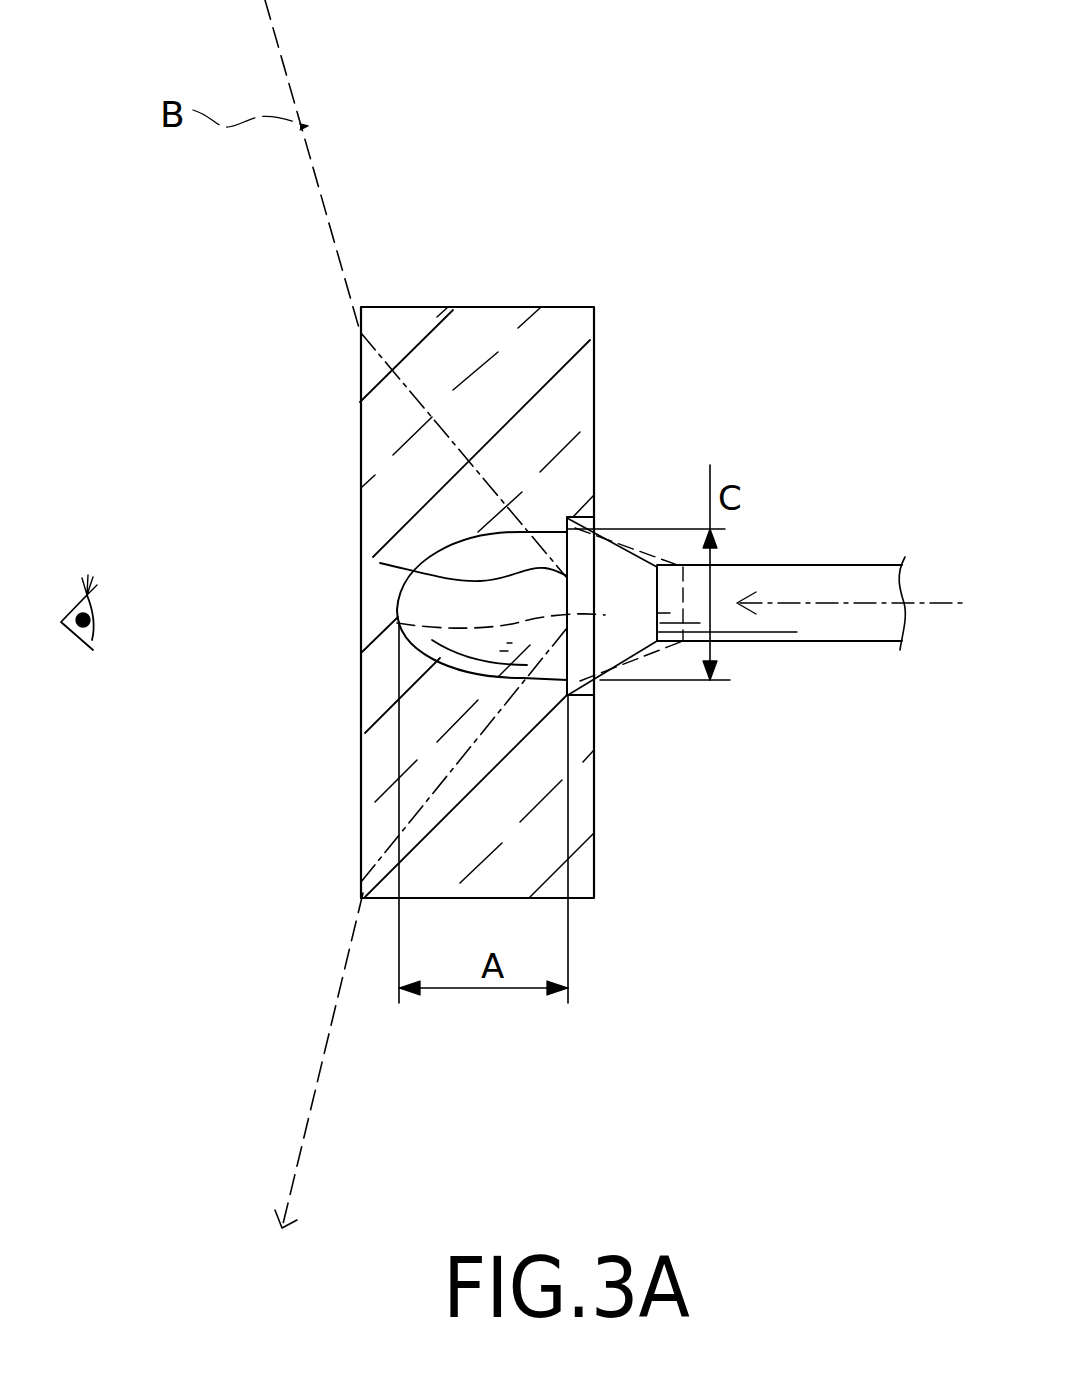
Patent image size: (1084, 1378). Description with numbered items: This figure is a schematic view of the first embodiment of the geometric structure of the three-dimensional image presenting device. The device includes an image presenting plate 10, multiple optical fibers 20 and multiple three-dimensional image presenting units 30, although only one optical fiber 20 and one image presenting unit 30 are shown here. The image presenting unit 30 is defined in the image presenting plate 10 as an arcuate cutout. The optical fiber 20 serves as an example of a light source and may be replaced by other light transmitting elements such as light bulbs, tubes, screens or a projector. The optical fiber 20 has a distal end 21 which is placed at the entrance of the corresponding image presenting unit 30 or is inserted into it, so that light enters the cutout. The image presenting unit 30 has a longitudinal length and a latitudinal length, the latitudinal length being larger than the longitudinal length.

The image presenting plate 10 is at (472, 308).
The optical fiber 20 is at (828, 639).
The distal end 21 is at (380, 563).
The 3D image presenting unit 30 is at (470, 658).